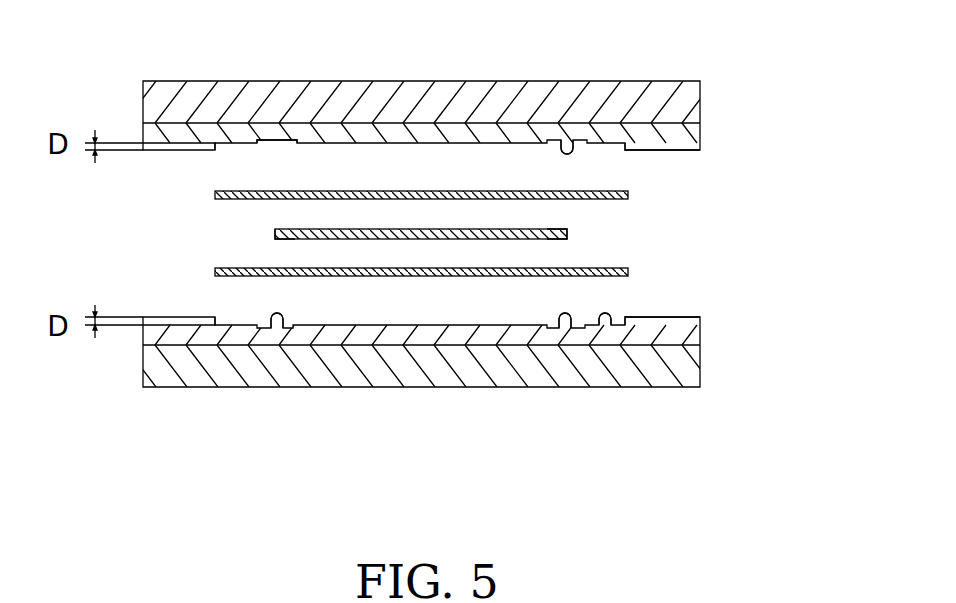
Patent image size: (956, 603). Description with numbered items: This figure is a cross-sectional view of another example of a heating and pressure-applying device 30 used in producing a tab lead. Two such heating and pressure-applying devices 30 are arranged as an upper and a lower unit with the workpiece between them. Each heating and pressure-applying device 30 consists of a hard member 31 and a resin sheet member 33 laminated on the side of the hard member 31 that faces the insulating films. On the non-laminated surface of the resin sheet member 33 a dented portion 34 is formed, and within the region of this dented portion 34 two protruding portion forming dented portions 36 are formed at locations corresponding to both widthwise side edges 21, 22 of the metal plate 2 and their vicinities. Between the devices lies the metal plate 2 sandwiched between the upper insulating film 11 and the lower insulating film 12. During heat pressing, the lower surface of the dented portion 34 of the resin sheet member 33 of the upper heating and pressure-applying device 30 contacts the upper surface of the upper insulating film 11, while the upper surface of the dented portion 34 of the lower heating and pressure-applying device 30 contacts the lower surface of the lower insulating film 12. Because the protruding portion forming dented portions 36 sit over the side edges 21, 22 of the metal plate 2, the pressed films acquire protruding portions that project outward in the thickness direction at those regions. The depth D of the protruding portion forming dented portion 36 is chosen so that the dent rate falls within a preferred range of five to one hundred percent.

The heating and pressure-applying device 30 is at (660, 95).
The hard member 31 is at (688, 95).
The resin sheet member 33 is at (688, 138).
The dented portion 34 is at (237, 146).
The protruding portion forming dented portion 36 is at (568, 152).
The upper insulating film 11 is at (628, 194).
The lower insulating film 12 is at (628, 271).
The metal plate 2 is at (567, 230).
The widthwise side edge 21 is at (272, 232).
The widthwise side edge 22 is at (567, 235).